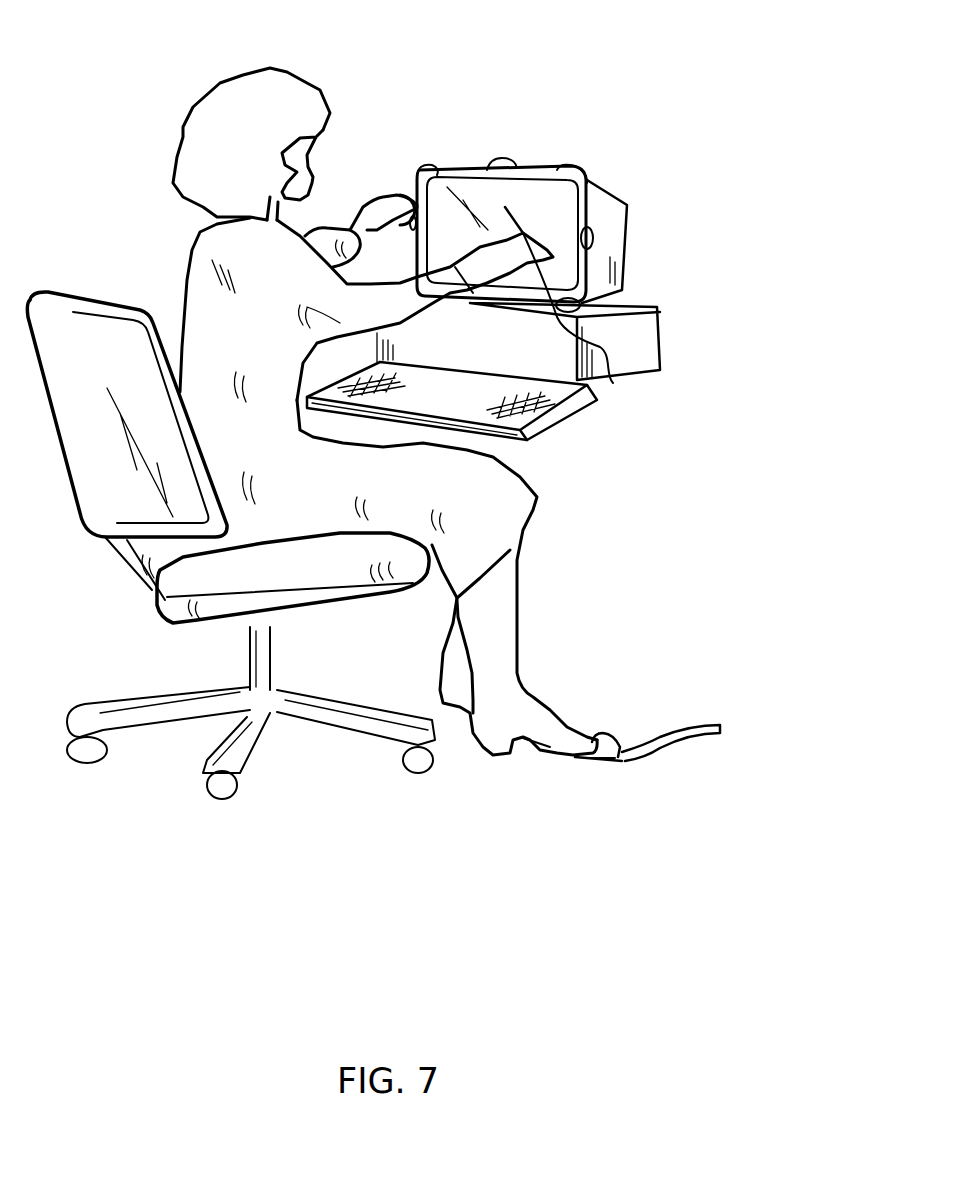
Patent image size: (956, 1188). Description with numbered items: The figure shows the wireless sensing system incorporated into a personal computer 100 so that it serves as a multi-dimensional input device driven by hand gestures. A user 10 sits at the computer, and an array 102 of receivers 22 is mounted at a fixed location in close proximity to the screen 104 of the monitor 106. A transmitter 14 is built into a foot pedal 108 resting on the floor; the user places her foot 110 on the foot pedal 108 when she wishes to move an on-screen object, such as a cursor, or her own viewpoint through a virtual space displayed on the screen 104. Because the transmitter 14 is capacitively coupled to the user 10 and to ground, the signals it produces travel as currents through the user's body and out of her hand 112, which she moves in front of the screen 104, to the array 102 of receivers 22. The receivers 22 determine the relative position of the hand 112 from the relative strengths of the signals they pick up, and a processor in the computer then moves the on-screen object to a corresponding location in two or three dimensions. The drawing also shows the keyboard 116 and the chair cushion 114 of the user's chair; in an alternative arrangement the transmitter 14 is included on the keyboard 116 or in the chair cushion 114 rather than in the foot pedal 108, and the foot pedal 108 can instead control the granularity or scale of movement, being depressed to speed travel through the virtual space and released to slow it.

The user 10 is at (178, 270).
The transmitter 14 is at (610, 760).
The receivers 22 is at (613, 226).
The personal computer 100 is at (712, 324).
The array of receivers 102 is at (690, 114).
The screen 104 is at (480, 167).
The monitor 106 is at (613, 217).
The foot pedal 108 is at (606, 710).
The foot 110 is at (550, 750).
The hand 112 is at (613, 383).
The chair cushion 114 is at (153, 612).
The keyboard 116 is at (547, 408).